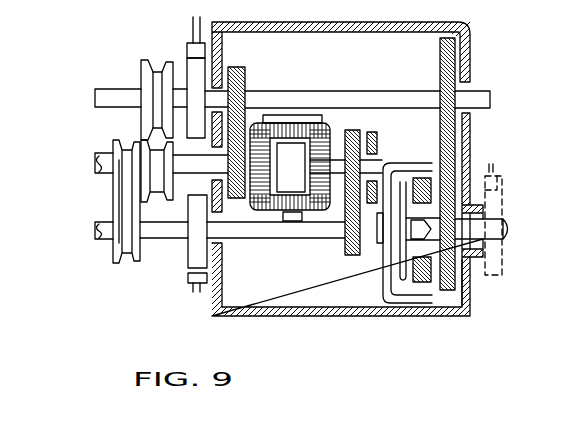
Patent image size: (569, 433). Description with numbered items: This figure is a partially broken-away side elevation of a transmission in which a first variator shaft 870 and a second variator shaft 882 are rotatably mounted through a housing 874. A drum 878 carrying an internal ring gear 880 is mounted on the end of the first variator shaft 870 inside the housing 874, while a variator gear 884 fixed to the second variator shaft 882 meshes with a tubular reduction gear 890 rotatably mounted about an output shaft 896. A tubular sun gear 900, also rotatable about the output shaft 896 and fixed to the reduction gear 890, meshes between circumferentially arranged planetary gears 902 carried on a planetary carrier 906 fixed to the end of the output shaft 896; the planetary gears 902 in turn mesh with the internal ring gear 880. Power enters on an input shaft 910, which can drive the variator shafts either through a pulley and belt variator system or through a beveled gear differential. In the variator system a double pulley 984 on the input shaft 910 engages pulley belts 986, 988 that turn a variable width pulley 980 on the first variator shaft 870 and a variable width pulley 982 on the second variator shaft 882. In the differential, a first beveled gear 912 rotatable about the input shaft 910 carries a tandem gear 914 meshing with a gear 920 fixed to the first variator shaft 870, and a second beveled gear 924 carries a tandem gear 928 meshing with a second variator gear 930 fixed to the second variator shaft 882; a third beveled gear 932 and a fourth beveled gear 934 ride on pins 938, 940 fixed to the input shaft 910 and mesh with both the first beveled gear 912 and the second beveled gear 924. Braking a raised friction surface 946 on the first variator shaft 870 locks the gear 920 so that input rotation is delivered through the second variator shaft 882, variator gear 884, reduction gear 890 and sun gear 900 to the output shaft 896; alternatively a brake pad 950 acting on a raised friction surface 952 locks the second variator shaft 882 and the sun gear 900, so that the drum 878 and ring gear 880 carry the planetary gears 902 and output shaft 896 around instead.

The first variator shaft 870 is at (100, 228).
The housing 874 is at (466, 317).
The drum 878 is at (387, 283).
The internal ring gear 880 is at (423, 180).
The second variator shaft 882 is at (108, 96).
The variator gear 884 is at (452, 62).
The tubular reduction gear 890 is at (457, 182).
The output shaft 896 is at (510, 229).
The tubular sun gear 900 is at (460, 277).
The planetary gears 902 is at (458, 287).
The planetary carrier 906 is at (403, 282).
The input shaft 910 is at (100, 160).
The first beveled gear 912 is at (333, 137).
The tandem gear 914 is at (355, 128).
The gear 920 is at (356, 252).
The second beveled gear 924 is at (255, 123).
The tandem gear 928 is at (237, 135).
The second variator gear 930 is at (237, 70).
The third beveled gear 932 is at (287, 124).
The fourth beveled gear 934 is at (262, 212).
The pin 938 is at (303, 115).
The pin 940 is at (299, 221).
The raised friction surface 946 is at (195, 250).
The brake pad 950 is at (200, 33).
The raised friction surface 952 is at (195, 70).
The variable width pulley 980 is at (110, 258).
The variable width pulley 982 is at (141, 72).
The double pulley 984 is at (120, 180).
The pulley belt 986 is at (128, 195).
The pulley belt 988 is at (153, 105).